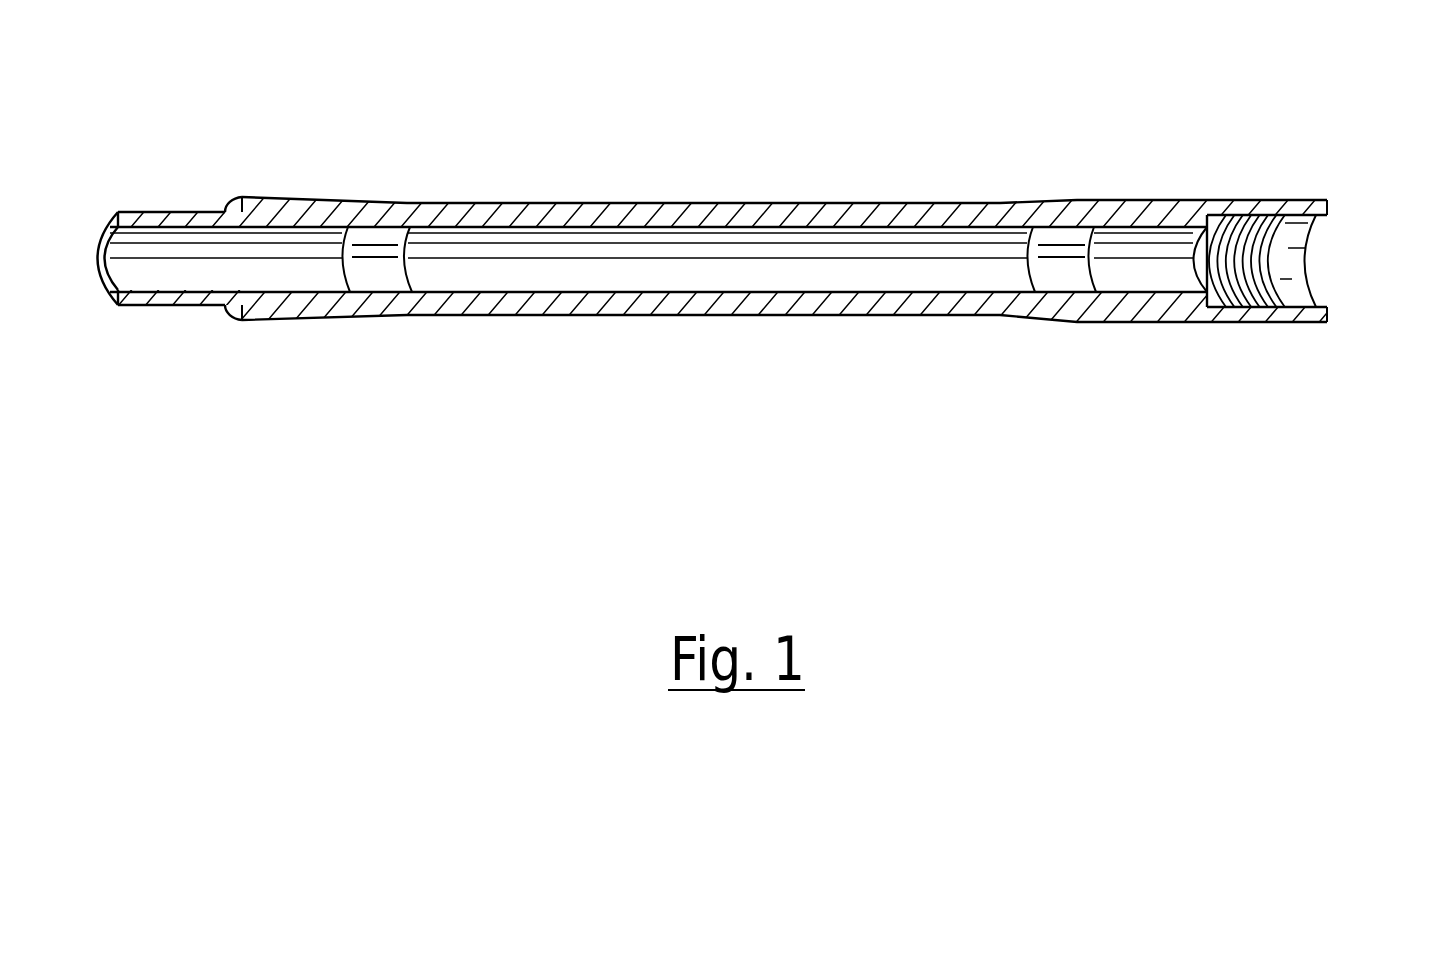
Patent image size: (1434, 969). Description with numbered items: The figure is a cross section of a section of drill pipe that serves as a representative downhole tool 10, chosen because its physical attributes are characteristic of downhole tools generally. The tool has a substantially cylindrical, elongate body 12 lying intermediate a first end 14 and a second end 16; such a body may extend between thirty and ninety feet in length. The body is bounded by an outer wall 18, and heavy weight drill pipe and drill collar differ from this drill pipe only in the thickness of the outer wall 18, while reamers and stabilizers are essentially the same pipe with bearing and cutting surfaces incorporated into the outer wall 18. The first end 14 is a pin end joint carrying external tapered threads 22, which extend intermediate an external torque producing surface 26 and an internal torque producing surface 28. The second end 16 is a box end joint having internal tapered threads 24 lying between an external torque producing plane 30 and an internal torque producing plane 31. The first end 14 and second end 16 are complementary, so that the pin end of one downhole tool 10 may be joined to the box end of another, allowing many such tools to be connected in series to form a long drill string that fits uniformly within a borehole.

The downhole tool 10 is at (1327, 340).
The cylindrical body 12 is at (748, 203).
The first end 14 is at (345, 198).
The second end 16 is at (1233, 200).
The outer wall 18 is at (665, 215).
The external tapered threads 22 is at (165, 207).
The internal tapered threads 24 is at (1313, 280).
The external torque producing surface 26 is at (232, 203).
The internal torque producing surface 28 is at (98, 209).
The external torque producing plane 30 is at (1328, 202).
The internal torque producing plane 31 is at (1215, 252).